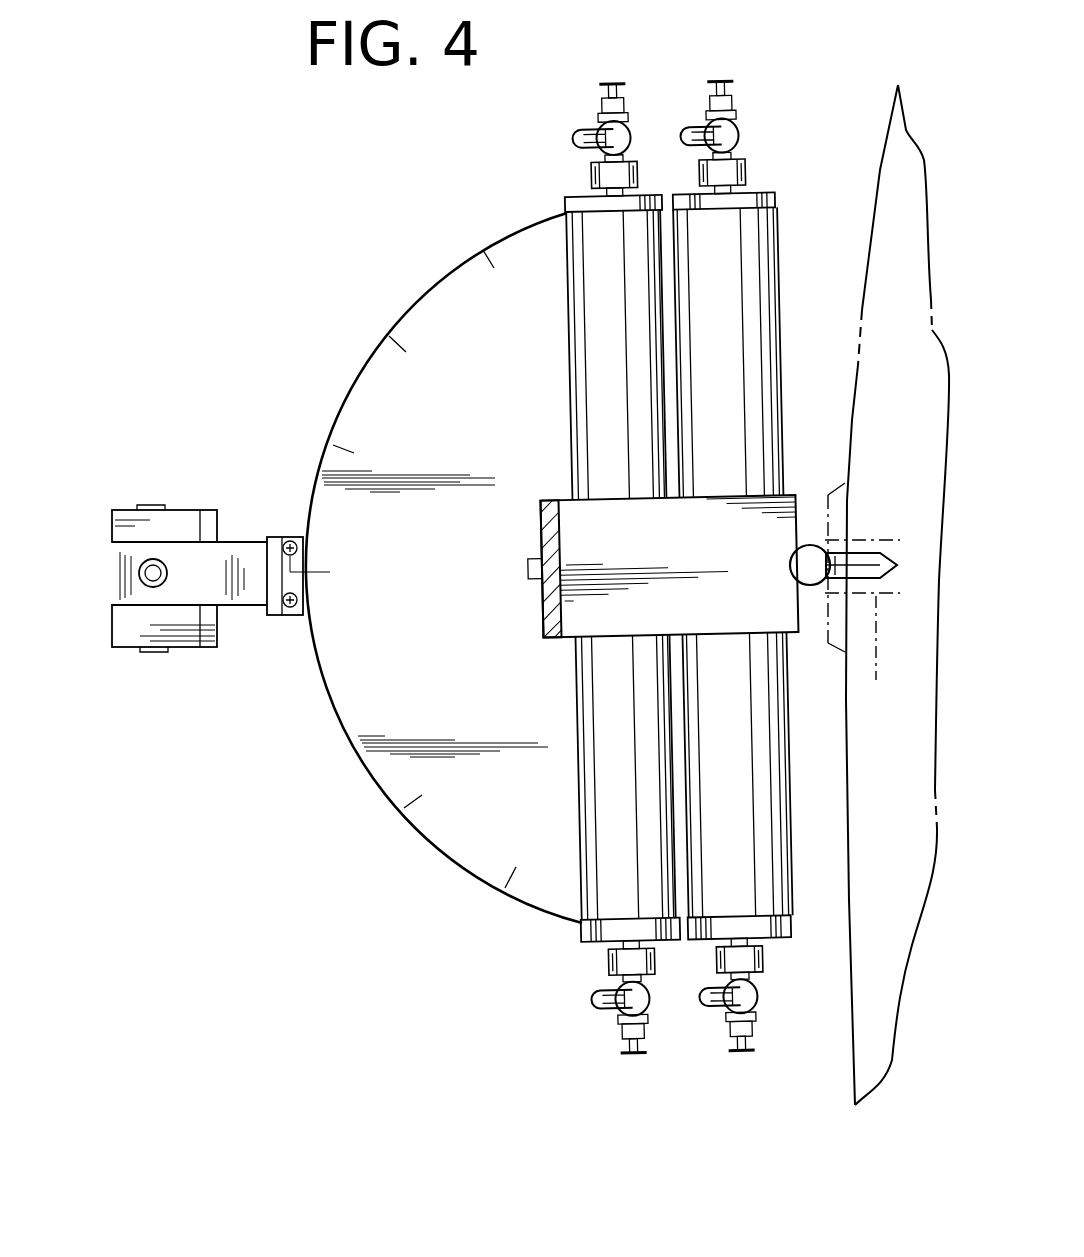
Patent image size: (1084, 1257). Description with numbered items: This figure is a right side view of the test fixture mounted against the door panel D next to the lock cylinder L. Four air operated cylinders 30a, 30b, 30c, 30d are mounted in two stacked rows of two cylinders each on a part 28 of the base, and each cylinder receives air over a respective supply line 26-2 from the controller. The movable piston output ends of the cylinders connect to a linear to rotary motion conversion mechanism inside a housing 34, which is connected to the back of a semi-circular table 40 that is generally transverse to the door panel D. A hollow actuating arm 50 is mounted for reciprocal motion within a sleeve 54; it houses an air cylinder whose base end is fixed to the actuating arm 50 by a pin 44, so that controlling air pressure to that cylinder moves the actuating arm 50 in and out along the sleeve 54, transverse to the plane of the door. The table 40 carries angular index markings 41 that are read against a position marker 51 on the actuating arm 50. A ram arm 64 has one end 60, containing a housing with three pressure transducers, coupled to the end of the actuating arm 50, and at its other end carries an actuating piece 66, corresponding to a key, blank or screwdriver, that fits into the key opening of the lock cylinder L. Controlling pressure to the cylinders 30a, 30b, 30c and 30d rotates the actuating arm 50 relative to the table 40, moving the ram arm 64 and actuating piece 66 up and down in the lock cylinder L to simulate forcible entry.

The supply line 26-2 is at (716, 140).
The part of the base 28 is at (548, 628).
The air operated cylinder 30a is at (745, 252).
The air operated cylinder 30b is at (775, 893).
The air operated cylinder 30c is at (592, 411).
The air operated cylinder 30d is at (596, 754).
The housing 34 is at (578, 538).
The semi-circular table 40 is at (364, 392).
The angular index markings 41 is at (490, 264).
The pin 44 is at (150, 573).
The actuating arm 50 is at (247, 590).
The position marker 51 is at (306, 545).
The sleeve 54 is at (247, 542).
The end of the ram arm 60 is at (168, 525).
The ram arm 64 is at (806, 562).
The actuating piece 66 is at (862, 556).
The lock cylinder L is at (862, 597).
The door panel D is at (866, 1046).